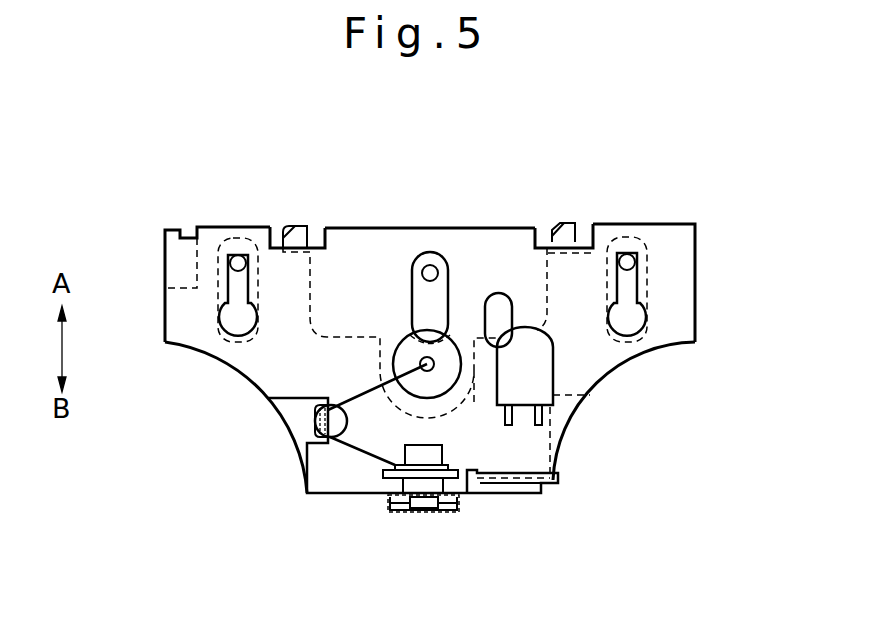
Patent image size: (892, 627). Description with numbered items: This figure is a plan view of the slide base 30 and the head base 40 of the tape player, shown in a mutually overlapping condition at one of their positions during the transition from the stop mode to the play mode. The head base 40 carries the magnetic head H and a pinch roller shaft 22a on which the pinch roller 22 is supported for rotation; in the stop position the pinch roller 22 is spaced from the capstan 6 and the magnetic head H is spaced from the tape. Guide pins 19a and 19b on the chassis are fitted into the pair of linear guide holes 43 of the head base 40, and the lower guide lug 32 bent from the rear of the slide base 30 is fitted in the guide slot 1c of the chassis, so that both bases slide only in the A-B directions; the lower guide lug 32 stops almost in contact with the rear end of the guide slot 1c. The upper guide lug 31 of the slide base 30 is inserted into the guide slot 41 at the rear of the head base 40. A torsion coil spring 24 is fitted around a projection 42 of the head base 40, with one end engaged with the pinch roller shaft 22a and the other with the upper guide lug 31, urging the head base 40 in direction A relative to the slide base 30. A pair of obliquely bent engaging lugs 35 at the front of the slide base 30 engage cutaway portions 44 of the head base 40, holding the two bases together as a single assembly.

The guide slot 1c is at (449, 512).
The capstan 6 is at (430, 266).
The guide pin 19a is at (237, 256).
The guide pin 19b is at (627, 255).
The pinch roller 22 is at (400, 348).
The pinch roller shaft 22a is at (404, 333).
The torsion coil spring 24 is at (358, 392).
The slide base 30 is at (273, 415).
The upper guide lug 31 is at (378, 497).
The lower guide lug 32 is at (427, 509).
The engaging lug 35 is at (290, 235).
The head base 40 is at (253, 360).
The guide slot 41 is at (421, 455).
The projection 42 is at (320, 427).
The guide hole 43 is at (228, 296).
The cutaway portion 44 is at (315, 240).
The magnetic head H is at (528, 370).